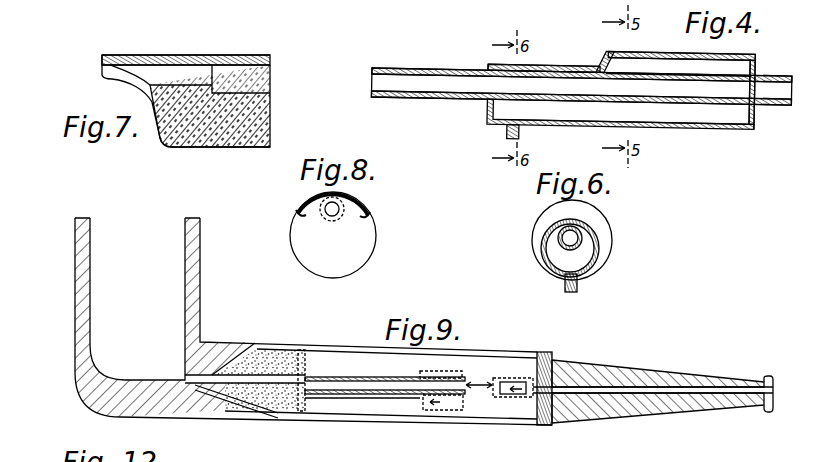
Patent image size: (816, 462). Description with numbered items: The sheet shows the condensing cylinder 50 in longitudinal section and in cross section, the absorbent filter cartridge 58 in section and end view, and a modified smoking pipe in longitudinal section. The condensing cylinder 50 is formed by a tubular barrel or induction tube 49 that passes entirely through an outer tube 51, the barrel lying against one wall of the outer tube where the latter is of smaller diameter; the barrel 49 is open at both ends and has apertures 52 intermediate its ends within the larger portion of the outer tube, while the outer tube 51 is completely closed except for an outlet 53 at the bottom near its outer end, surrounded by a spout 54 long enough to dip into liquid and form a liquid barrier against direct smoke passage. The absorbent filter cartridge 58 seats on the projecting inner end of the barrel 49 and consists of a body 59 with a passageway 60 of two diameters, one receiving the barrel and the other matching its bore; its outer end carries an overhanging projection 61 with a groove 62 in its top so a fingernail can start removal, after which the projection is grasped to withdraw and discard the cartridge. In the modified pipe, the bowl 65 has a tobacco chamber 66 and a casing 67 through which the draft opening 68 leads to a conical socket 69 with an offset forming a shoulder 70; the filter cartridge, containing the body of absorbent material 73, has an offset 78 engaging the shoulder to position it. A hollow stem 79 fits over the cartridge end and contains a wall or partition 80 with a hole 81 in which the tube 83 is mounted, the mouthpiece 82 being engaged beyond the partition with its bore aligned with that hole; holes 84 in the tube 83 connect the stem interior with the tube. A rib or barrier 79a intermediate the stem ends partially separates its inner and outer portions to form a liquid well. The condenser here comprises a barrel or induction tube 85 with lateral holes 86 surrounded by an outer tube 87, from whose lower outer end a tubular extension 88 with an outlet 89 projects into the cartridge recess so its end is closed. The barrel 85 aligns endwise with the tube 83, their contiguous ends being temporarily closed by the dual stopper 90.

In FIG. 4, the tubular barrel or induction tube 49 is at (455, 68).
In FIG. 6, the tubular barrel or induction tube 49 is at (579, 247).
In FIG. 4, the condensing cylinder 50 is at (598, 60).
In FIG. 6, the condensing cylinder 50 is at (612, 222).
In FIG. 4, the outer tube 51 is at (731, 122).
In FIG. 4, the apertures 52 is at (620, 73).
In FIG. 4, the outlet 53 is at (516, 117).
In FIG. 6, the outlet 53 is at (598, 260).
In FIG. 4, the spout 54 is at (508, 128).
In FIG. 6, the spout 54 is at (565, 286).
In FIG. 7, the absorbent filter cartridge 58 is at (225, 155).
In FIG. 8, the absorbent filter cartridge 58 is at (287, 248).
In FIG. 7, the body 59 is at (262, 103).
In FIG. 8, the body 59 is at (305, 230).
In FIG. 7, the passageway 60 is at (197, 78).
In FIG. 8, the passageway 60 is at (340, 209).
In FIG. 7, the overhanging projection 61 is at (115, 56).
In FIG. 8, the overhanging projection 61 is at (313, 201).
In FIG. 7, the groove 62 is at (137, 55).
In FIG. 9, the bowl 65 is at (98, 296).
In FIG. 9, the tobacco chamber 66 is at (120, 232).
In FIG. 9, the casing 67 is at (226, 352).
In FIG. 9, the draft opening 68 is at (196, 412).
In FIG. 9, the socket 69 is at (245, 414).
In FIG. 9, the shoulder 70 is at (250, 356).
In FIG. 9, the body of absorbent material 73 is at (296, 360).
In FIG. 9, the offset 78 is at (195, 420).
In FIG. 9, the hollow stem 79 is at (508, 352).
In FIG. 9, the rib or barrier 79a is at (432, 420).
In FIG. 9, the wall or partition 80 is at (566, 362).
In FIG. 9, the hole 81 is at (546, 422).
In FIG. 9, the mouthpiece 82 is at (656, 378).
In FIG. 9, the tube 83 is at (515, 400).
In FIG. 9, the holes 84 is at (505, 380).
In FIG. 9, the barrel or induction tube 85 is at (385, 377).
In FIG. 9, the lateral holes 86 is at (448, 371).
In FIG. 9, the outer tube 87 is at (470, 384).
In FIG. 9, the tubular extension 88 is at (368, 413).
In FIG. 9, the outlet 89 is at (338, 413).
In FIG. 9, the dual stopper 90 is at (485, 392).